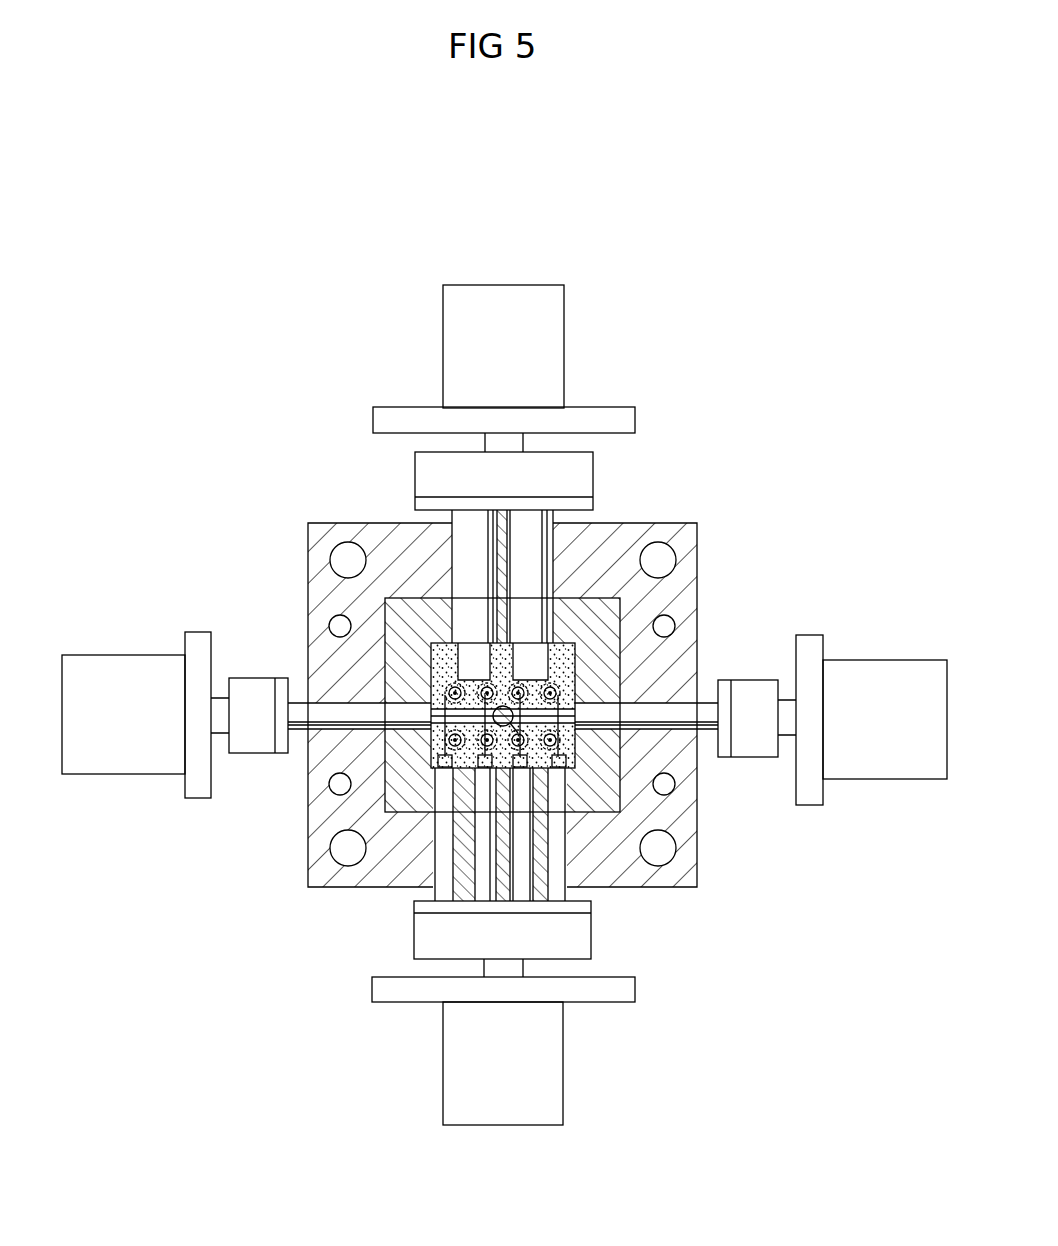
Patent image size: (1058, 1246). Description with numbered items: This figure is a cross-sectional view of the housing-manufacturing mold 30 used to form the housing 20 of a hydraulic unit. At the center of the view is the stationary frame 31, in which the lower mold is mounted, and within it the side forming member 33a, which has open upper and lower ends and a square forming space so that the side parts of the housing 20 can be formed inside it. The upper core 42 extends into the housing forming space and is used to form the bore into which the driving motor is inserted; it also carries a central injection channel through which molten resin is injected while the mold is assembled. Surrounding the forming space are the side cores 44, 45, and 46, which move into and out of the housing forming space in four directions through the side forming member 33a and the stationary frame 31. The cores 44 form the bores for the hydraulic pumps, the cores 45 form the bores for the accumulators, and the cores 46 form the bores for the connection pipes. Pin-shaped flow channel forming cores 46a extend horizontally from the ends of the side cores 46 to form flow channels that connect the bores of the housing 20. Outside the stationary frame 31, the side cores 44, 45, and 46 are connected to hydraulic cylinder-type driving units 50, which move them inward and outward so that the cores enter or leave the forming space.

The mold 30 is at (303, 455).
The stationary frame 31 is at (688, 543).
The upper core 42 is at (558, 790).
The side forming member 33a is at (607, 603).
The side cores for accumulator bores 45 is at (555, 562).
The side cores for connection pipe bores 46 is at (556, 847).
The flow channel forming cores 46a is at (437, 742).
The housing 20 is at (433, 742).
The side cores for hydraulic pump bores 44 is at (333, 707).
The hydraulic cylinder-type driving units 50 is at (553, 330).